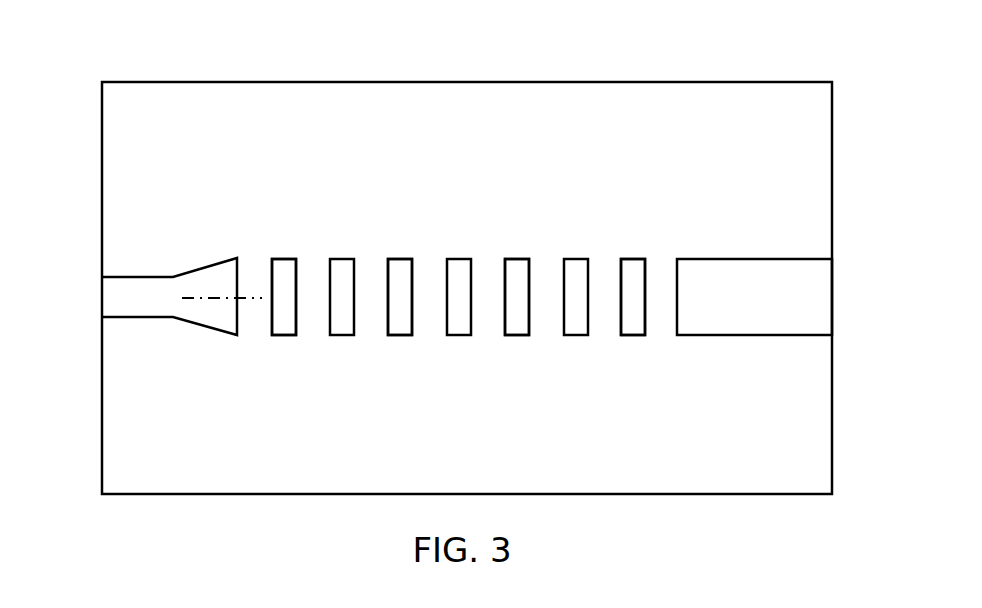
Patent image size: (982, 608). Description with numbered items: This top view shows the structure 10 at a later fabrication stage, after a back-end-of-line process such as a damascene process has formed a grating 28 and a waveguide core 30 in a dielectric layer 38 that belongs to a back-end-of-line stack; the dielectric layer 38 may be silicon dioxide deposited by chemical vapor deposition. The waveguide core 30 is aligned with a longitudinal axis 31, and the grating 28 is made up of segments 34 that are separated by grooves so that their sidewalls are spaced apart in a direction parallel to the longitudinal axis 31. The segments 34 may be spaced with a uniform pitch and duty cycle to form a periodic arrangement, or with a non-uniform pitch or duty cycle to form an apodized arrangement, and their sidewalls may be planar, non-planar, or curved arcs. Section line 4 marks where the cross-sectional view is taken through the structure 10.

The structure 10 is at (152, 56).
The grating 28 is at (278, 246).
The waveguide core 30 is at (160, 297).
The longitudinal axis 31 is at (215, 303).
The segments 34 is at (289, 305).
The dielectric layer 38 is at (798, 452).
The section line 4- 4 is at (48, 305).